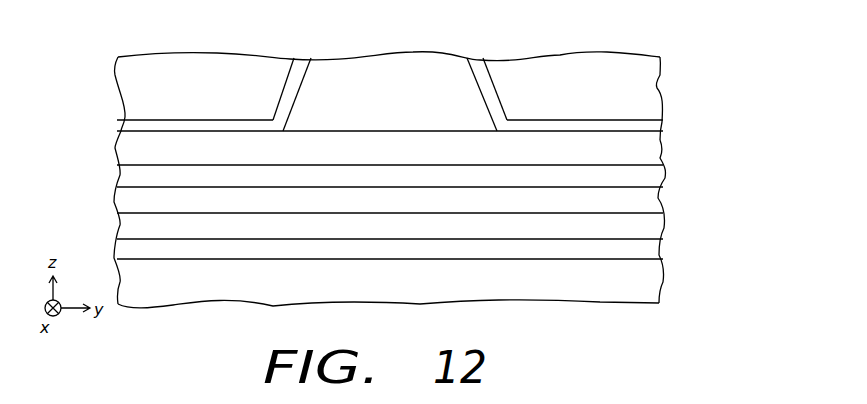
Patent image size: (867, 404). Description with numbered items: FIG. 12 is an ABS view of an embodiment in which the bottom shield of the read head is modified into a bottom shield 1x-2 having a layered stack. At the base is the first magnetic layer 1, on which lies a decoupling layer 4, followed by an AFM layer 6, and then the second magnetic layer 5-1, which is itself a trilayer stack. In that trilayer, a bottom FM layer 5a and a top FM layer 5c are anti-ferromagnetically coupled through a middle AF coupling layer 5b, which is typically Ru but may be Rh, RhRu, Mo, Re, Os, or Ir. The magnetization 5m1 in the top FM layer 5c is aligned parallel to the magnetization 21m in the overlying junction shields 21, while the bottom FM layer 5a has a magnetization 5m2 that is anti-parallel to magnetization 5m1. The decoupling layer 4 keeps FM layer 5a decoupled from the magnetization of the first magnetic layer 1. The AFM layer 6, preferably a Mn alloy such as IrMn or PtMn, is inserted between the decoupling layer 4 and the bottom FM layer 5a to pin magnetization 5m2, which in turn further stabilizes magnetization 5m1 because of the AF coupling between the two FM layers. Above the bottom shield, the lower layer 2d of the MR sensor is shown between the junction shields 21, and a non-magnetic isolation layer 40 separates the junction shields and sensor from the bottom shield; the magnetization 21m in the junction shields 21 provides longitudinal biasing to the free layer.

The first magnetic layer 1 is at (650, 270).
The decoupling layer 4 is at (650, 245).
The AFM layer 6 is at (134, 229).
The bottom FM layer 5a is at (650, 202).
The AF coupling layer 5b is at (650, 175).
The top FM layer 5c is at (650, 150).
The second magnetic layer 5-1 is at (104, 136).
The magnetization in FM layer 5c 5m1 is at (425, 155).
The magnetization in FM layer 5a 5m2 is at (433, 200).
The non-magnetic isolation layer 40 is at (126, 128).
The junction shields 21 is at (650, 88).
The magnetization in the junction shields 21m is at (224, 104).
The lower layer 2d is at (377, 64).
The bottom shield 1x-2 is at (717, 131).